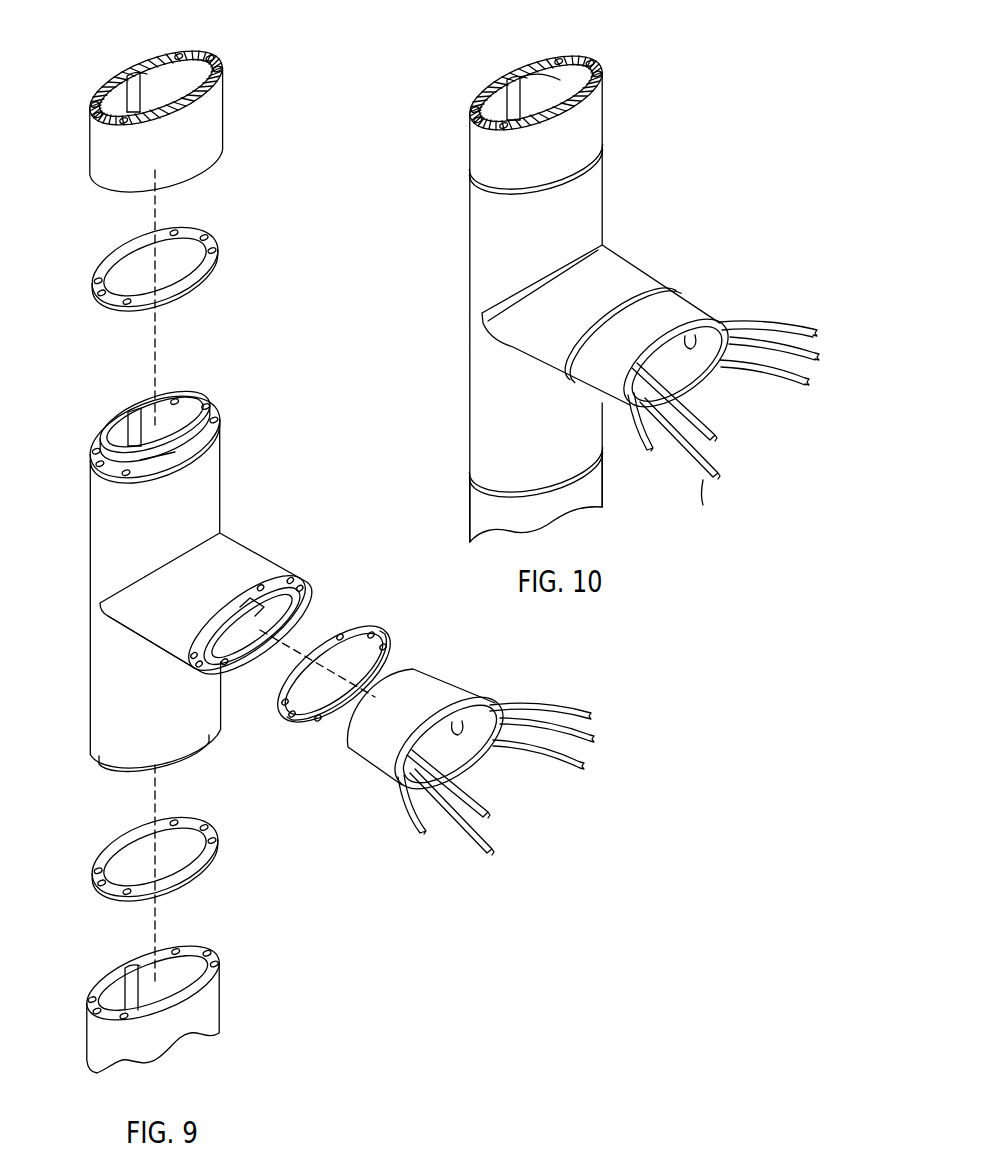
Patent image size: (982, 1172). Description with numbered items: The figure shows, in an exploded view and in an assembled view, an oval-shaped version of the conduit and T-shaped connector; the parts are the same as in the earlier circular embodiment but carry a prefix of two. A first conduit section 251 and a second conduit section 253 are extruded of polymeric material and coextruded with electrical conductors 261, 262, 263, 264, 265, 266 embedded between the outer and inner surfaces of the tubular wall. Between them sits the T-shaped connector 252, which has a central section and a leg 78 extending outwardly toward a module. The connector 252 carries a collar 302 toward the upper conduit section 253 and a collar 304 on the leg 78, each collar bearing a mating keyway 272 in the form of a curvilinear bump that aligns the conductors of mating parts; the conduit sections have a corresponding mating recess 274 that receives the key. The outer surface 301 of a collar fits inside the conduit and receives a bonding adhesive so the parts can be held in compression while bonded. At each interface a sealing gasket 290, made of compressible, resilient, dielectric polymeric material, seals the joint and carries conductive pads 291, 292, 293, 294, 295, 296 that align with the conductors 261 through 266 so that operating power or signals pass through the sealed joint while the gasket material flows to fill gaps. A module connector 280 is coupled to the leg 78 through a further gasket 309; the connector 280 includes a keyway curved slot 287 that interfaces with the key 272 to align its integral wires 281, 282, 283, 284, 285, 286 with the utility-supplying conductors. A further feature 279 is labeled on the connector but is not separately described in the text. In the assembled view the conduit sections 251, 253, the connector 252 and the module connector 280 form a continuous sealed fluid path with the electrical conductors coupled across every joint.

In FIG. 9, the leg 78 is at (162, 623).
In FIG. 9, the conduit section 251 is at (210, 1000).
In FIG. 10, the conduit section 251 is at (578, 487).
In FIG. 9, the T-shaped connector 252 is at (220, 495).
In FIG. 10, the T-shaped connector 252 is at (602, 193).
In FIG. 9, the conduit section 253 is at (210, 122).
In FIG. 10, the conduit section 253 is at (587, 112).
In FIG. 9, the electrical conductor 261 is at (182, 50).
In FIG. 10, the electrical conductor 261 is at (562, 58).
In FIG. 9, the electrical conductor 262 is at (210, 58).
In FIG. 10, the electrical conductor 262 is at (593, 62).
In FIG. 9, the electrical conductor 263 is at (222, 68).
In FIG. 10, the electrical conductor 263 is at (602, 75).
In FIG. 9, the electrical conductor 264 is at (125, 102).
In FIG. 10, the electrical conductor 264 is at (507, 110).
In FIG. 9, the electrical conductor 265 is at (88, 110).
In FIG. 10, the electrical conductor 265 is at (472, 115).
In FIG. 9, the electrical conductor 266 is at (95, 100).
In FIG. 10, the electrical conductor 266 is at (473, 103).
In FIG. 9, the mating keyway 272 is at (130, 410).
In FIG. 9, the mating recess 274 is at (147, 73).
In FIG. 10, the mating recess 274 is at (532, 80).
In FIG. 9, the opening 279 is at (167, 427).
In FIG. 10, the opening 279 is at (553, 85).
In FIG. 9, the module connector 280 is at (375, 750).
In FIG. 10, the module connector 280 is at (676, 362).
In FIG. 9, the wire 281 is at (553, 708).
In FIG. 10, the wire 281 is at (780, 328).
In FIG. 9, the wire 282 is at (585, 738).
In FIG. 10, the wire 282 is at (810, 360).
In FIG. 9, the wire 283 is at (567, 762).
In FIG. 10, the wire 283 is at (793, 383).
In FIG. 9, the wire 284 is at (482, 848).
In FIG. 9, the wire 285 is at (418, 820).
In FIG. 10, the wire 285 is at (640, 442).
In FIG. 9, the wire 286 is at (483, 807).
In FIG. 10, the wire 286 is at (708, 427).
In FIG. 9, the keyway curved slot 287 is at (463, 720).
In FIG. 10, the keyway curved slot 287 is at (690, 336).
In FIG. 9, the sealing gasket 290 is at (117, 252).
In FIG. 10, the sealing gasket 290 is at (497, 187).
In FIG. 9, the conductive pad 291 is at (178, 230).
In FIG. 9, the conductive pad 292 is at (212, 233).
In FIG. 9, the conductive pad 293 is at (220, 247).
In FIG. 9, the conductive pad 294 is at (123, 300).
In FIG. 9, the conductive pad 295 is at (93, 292).
In FIG. 9, the conductive pad 296 is at (92, 272).
In FIG. 9, the outer surface of collar 301 is at (172, 447).
In FIG. 9, the collar 302 is at (197, 393).
In FIG. 9, the collar 304 is at (312, 610).
In FIG. 9, the gasket 309 is at (387, 633).